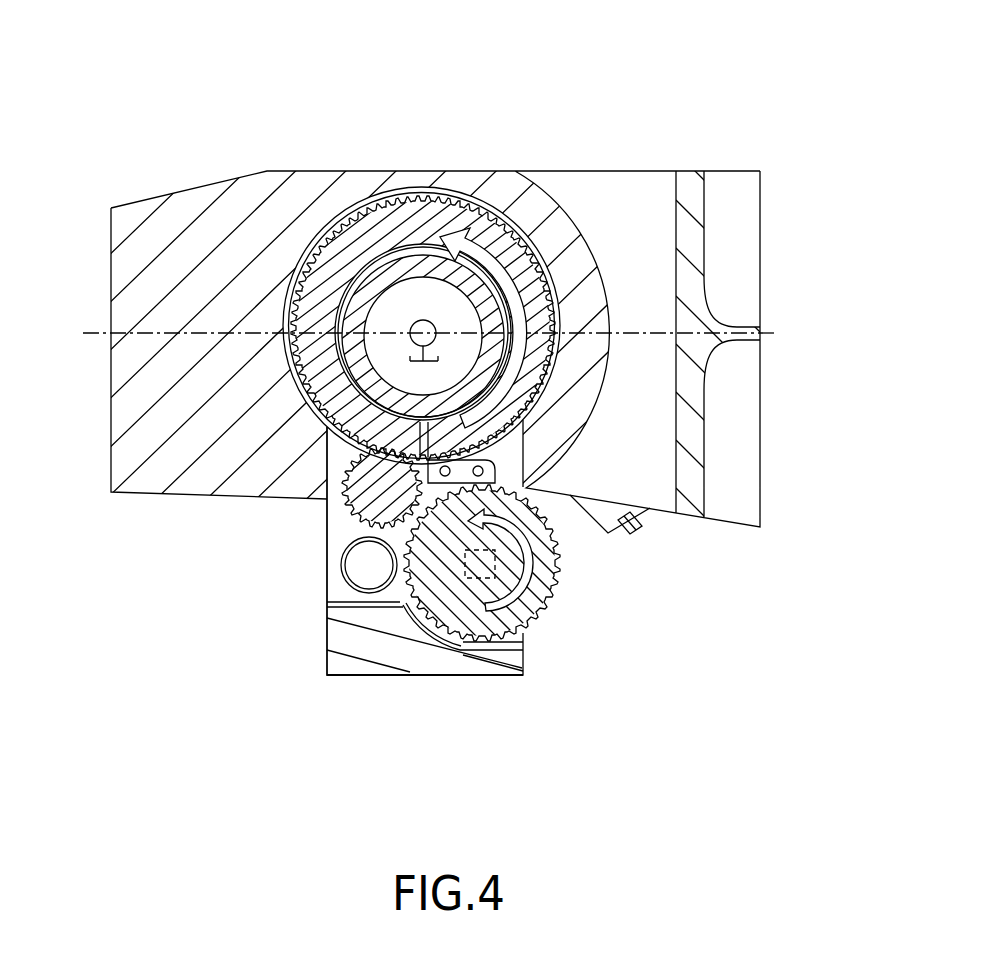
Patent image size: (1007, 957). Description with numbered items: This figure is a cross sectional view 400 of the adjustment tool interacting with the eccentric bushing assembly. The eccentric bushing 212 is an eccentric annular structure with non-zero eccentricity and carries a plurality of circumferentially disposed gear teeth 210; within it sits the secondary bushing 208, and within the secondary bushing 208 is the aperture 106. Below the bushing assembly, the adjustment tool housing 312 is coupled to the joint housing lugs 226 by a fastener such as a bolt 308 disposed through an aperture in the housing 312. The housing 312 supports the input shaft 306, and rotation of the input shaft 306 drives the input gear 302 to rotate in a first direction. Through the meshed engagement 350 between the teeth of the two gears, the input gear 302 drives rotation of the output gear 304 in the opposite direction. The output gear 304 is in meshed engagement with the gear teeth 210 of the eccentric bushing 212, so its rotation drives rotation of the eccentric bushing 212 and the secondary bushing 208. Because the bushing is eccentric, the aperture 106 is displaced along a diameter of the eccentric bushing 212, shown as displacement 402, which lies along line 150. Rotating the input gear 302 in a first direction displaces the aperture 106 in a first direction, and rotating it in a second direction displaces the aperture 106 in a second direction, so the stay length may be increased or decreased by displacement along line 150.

The cross sectional view 400 is at (190, 106).
The aperture 106 is at (423, 328).
The secondary bushing 208 is at (443, 247).
The eccentric bushing 212 is at (480, 218).
The line 150 is at (90, 334).
The displacement 402 is at (425, 367).
The gear teeth 210 is at (330, 426).
The joint housing lugs 226 is at (327, 600).
The output gear 304 is at (360, 500).
The bolt 308 is at (367, 573).
The housing 312 is at (326, 654).
The meshed engagement 350 is at (400, 607).
The input shaft 306 is at (467, 580).
The input gear 302 is at (530, 625).